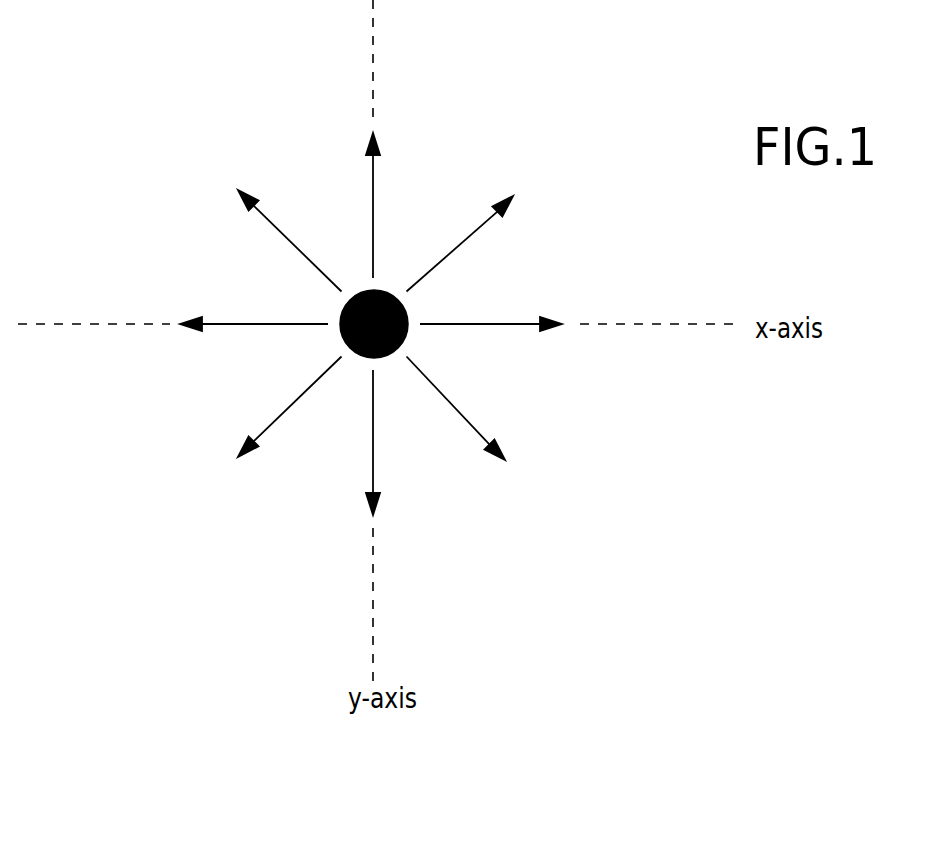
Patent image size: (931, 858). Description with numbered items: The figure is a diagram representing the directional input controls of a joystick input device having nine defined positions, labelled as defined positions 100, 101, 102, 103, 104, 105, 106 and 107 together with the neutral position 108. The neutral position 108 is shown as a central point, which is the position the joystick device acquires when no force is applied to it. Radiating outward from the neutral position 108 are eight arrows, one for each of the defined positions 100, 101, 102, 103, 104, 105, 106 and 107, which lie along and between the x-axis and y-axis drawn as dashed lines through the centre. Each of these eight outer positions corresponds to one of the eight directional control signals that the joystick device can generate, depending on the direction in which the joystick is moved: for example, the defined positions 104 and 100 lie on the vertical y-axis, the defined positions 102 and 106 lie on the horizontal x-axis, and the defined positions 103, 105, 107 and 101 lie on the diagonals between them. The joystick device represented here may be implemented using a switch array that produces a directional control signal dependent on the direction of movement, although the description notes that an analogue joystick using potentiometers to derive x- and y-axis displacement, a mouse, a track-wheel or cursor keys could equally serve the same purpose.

The defined position 100 is at (375, 503).
The defined position 101 is at (243, 447).
The defined position 102 is at (190, 312).
The defined position 103 is at (250, 198).
The defined position 104 is at (375, 140).
The defined position 105 is at (512, 200).
The defined position 106 is at (550, 323).
The defined position 107 is at (500, 453).
The neutral position 108 is at (336, 391).